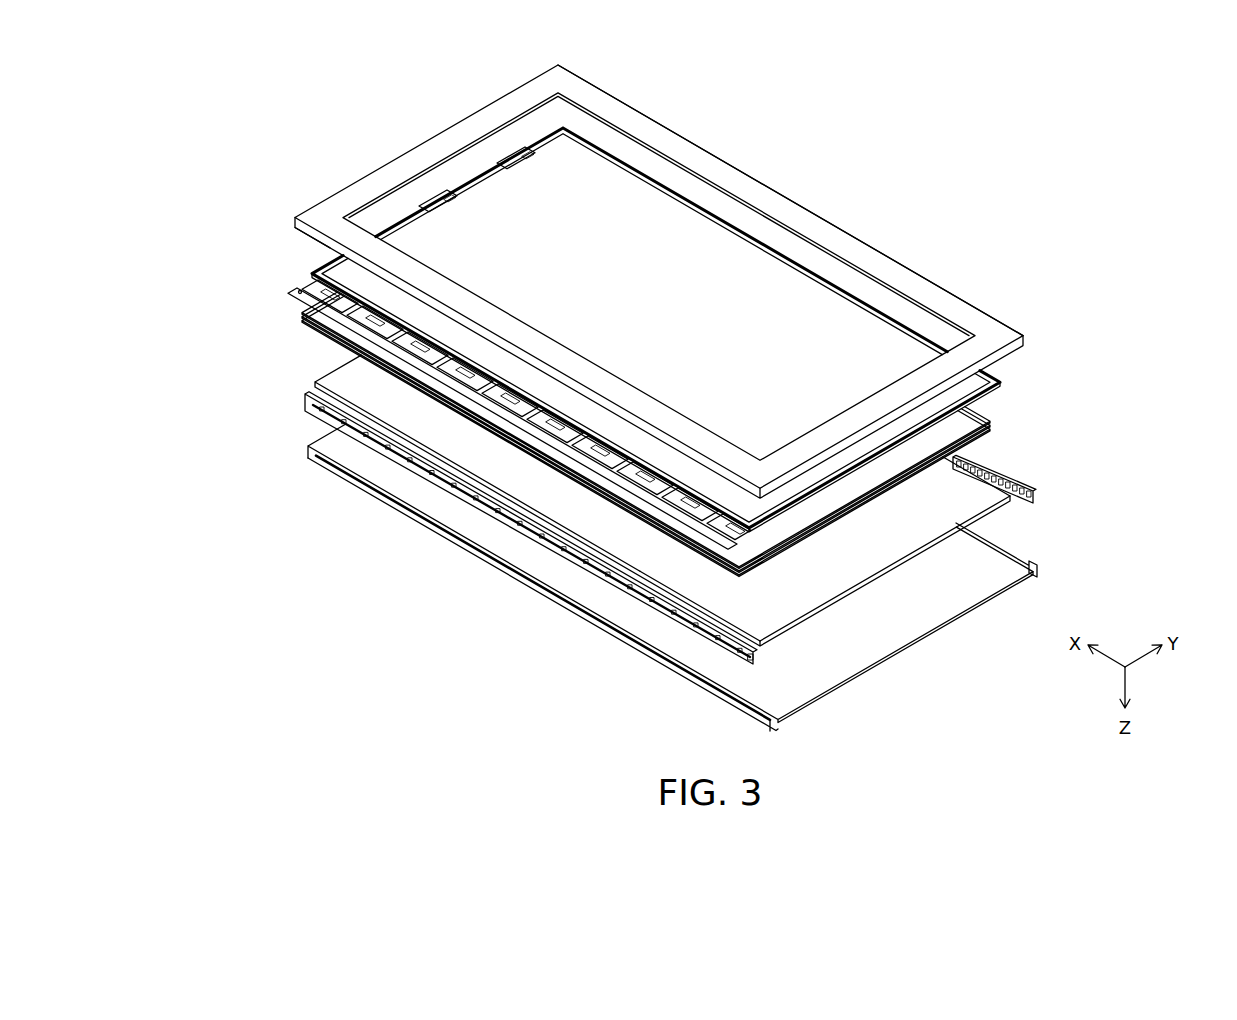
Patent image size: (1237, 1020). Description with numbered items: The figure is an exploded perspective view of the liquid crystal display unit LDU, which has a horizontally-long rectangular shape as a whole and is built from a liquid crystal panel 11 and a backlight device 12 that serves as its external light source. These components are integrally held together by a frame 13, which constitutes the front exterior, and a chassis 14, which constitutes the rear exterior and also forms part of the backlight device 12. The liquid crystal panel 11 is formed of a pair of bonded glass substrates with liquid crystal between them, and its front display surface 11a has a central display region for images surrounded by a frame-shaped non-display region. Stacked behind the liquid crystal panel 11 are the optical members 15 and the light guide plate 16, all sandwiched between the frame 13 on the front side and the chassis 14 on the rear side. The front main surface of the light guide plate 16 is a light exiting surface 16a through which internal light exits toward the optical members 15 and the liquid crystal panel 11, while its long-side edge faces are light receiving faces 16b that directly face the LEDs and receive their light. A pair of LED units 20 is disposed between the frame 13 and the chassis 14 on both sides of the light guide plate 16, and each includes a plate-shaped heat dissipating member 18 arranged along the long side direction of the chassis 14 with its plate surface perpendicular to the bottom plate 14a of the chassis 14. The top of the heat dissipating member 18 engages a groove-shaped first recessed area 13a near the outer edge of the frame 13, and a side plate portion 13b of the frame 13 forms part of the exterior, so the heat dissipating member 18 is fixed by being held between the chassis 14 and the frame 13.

The liquid crystal display unit LDU is at (978, 228).
The liquid crystal panel 11 is at (736, 222).
The display surface 11a is at (776, 291).
The backlight device 12 is at (453, 636).
The frame 13 is at (696, 141).
The first recessed area 13a is at (651, 129).
The bezel side plate portion 13b is at (300, 230).
The chassis 14 is at (432, 524).
The bottom plate 14a is at (853, 653).
The optical members 15 is at (992, 421).
The light guide plate 16 is at (878, 578).
The light exiting surface 16a is at (888, 542).
The light receiving faces 16b is at (697, 604).
The heat dissipating member 18 is at (1016, 490).
The LED unit 20 is at (1012, 497).